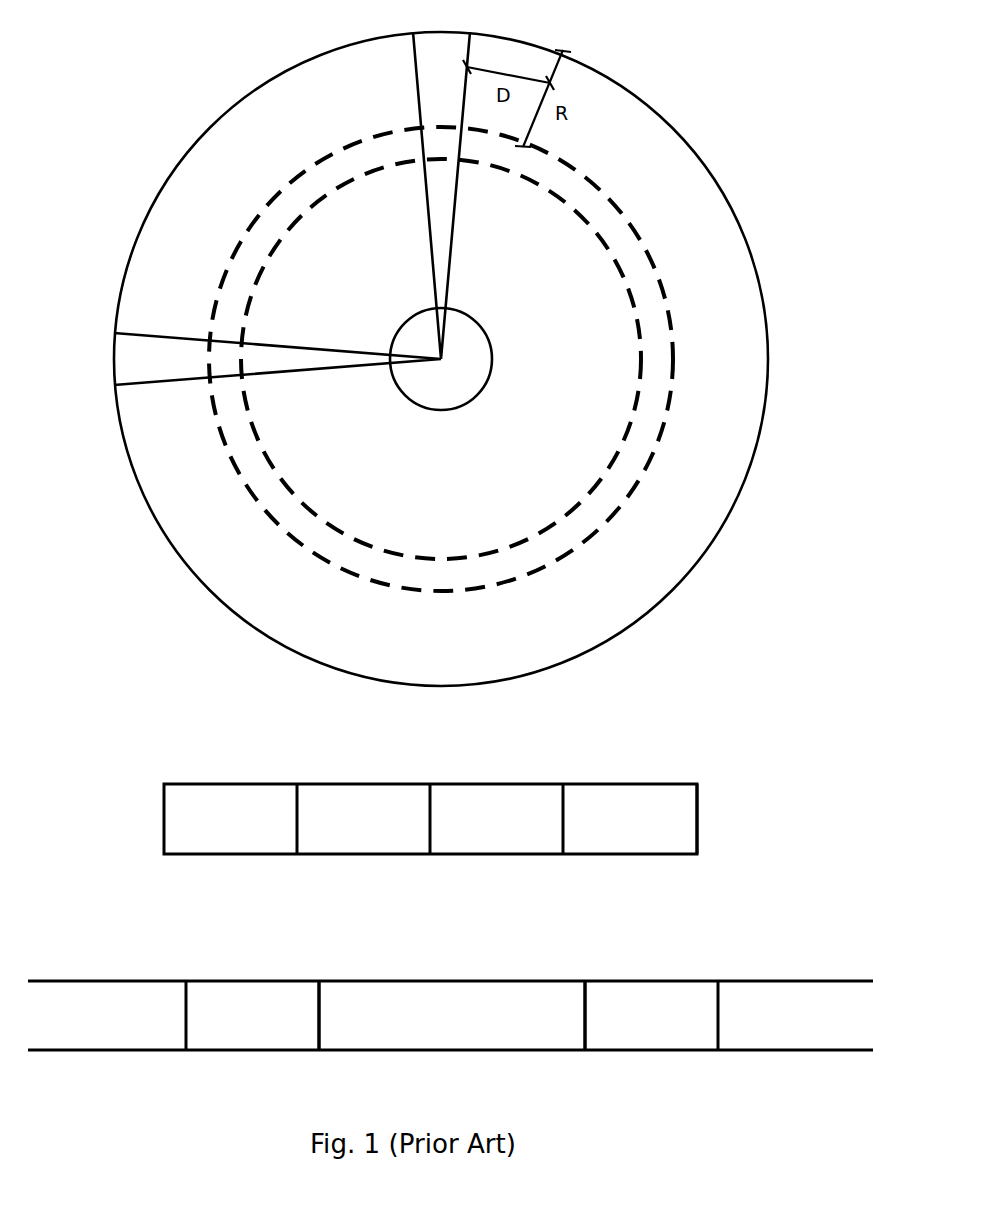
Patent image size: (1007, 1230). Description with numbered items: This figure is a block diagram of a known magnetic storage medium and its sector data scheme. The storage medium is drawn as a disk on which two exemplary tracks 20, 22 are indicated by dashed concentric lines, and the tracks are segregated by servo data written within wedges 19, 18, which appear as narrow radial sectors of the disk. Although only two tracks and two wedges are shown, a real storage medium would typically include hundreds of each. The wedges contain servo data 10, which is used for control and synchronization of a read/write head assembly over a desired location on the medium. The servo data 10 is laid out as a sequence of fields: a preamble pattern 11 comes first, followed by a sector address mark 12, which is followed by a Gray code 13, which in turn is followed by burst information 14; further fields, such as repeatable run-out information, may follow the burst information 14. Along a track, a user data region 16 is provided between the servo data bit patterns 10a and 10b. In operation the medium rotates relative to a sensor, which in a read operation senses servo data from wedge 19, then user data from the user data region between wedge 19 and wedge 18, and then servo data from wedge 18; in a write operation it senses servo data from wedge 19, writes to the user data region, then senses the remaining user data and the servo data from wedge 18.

The servo data 10 is at (548, 760).
The preamble pattern 11 is at (219, 847).
The sector address mark 12 is at (352, 847).
The Gray code 13 is at (485, 847).
The burst information 14 is at (618, 847).
The servo data bit pattern 10a is at (234, 1043).
The user data region 16 is at (440, 1043).
The servo data bit pattern 10b is at (633, 1043).
The wedge 18 is at (443, 37).
The wedge 19 is at (120, 362).
The track 20 is at (600, 240).
The track 22 is at (593, 185).